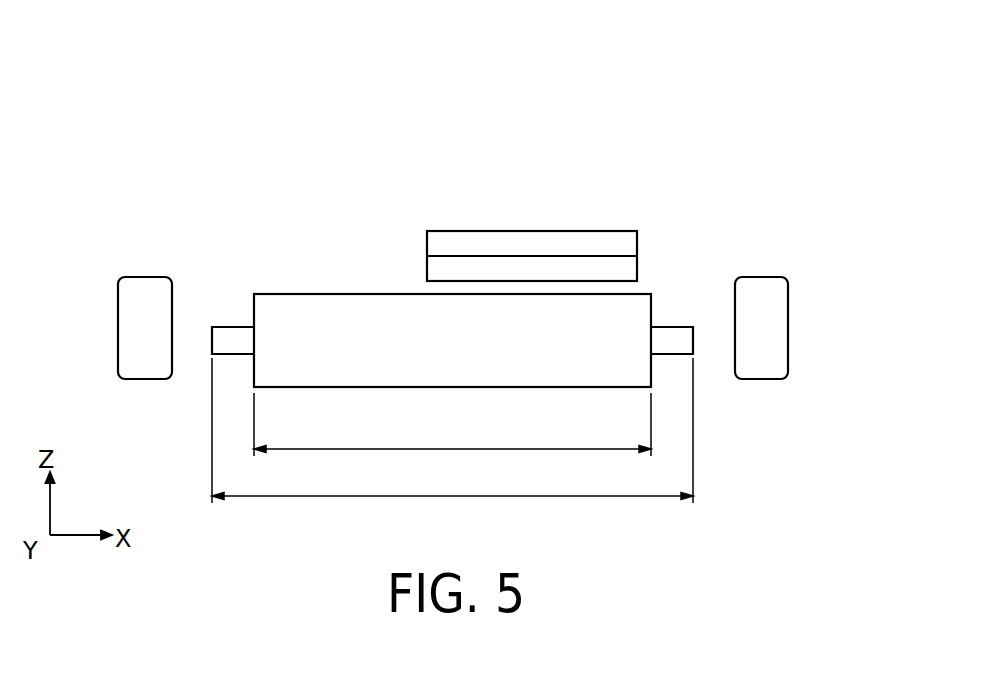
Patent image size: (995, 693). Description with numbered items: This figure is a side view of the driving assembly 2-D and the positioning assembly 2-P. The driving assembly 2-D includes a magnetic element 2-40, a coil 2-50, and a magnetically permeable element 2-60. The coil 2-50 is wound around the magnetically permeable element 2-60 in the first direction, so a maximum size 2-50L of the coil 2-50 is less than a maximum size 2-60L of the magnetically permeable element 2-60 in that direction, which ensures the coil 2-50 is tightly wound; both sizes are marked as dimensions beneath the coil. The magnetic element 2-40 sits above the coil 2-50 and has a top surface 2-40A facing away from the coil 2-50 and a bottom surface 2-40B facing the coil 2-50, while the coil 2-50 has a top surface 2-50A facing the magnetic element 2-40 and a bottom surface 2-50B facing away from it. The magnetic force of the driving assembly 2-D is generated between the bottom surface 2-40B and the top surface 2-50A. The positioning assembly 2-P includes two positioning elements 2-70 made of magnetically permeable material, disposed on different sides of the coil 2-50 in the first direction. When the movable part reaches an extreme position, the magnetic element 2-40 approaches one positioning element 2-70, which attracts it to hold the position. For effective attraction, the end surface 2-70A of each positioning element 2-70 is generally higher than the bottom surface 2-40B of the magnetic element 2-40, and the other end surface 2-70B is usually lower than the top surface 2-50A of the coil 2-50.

The driving assembly 2-D is at (82, 10).
The magnetic element 2-40 is at (466, 242).
The top surface of the magnetic element 2-40A is at (534, 231).
The bottom surface of the magnetic element 2-40B is at (618, 283).
The coil 2-50 is at (362, 325).
The top surface of the coil 2-50A is at (313, 294).
The bottom surface of the coil 2-50B is at (495, 387).
The maximum size of the coil 2-50L is at (452, 438).
The magnetically permeable element 2-60 is at (676, 327).
The maximum size of the magnetically permeable element 2-60L is at (452, 443).
The positioning element 2-70 is at (128, 327).
The end surface (top surface) of the positioning element 2-70A is at (146, 277).
The other end surface (bottom surface) of the positioning element 2-70B is at (145, 379).
The positioning assembly 2-P is at (66, 312).